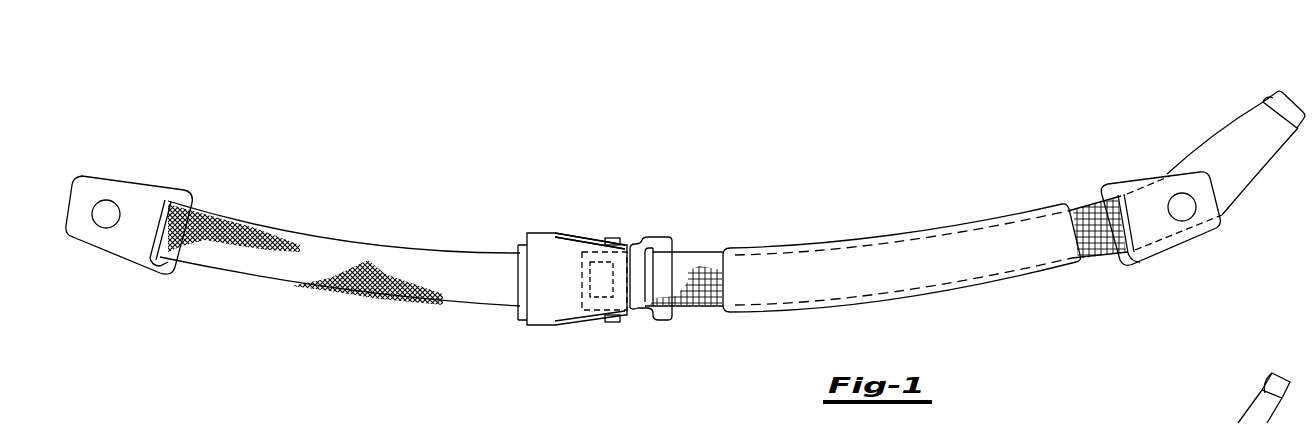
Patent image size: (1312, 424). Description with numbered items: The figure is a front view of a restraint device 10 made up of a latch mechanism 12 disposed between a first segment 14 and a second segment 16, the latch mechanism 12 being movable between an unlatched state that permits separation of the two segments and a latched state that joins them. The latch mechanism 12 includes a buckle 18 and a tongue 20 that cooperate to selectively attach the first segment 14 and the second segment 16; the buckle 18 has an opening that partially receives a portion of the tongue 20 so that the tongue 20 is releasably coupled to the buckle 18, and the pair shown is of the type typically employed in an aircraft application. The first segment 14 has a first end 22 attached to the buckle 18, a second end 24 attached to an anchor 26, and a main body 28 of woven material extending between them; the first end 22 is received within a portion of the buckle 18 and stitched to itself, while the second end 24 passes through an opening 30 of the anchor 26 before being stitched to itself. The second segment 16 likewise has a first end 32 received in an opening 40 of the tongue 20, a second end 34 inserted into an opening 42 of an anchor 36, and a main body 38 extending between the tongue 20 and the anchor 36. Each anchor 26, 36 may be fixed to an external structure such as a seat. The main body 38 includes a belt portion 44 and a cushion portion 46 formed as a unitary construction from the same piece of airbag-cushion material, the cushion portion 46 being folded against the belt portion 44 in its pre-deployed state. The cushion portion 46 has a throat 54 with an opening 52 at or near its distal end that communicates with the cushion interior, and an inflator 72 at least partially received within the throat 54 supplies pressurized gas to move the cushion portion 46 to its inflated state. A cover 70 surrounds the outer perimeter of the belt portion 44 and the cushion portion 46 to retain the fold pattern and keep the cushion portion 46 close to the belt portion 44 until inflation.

The restraint device 10 is at (244, 125).
The latch mechanism 12 is at (587, 332).
The first segment 14 is at (366, 233).
The second segment 16 is at (997, 203).
The buckle 18 is at (555, 235).
The tongue 20 is at (665, 322).
The first end 22 is at (541, 254).
The second end 24 is at (166, 200).
The anchor 26 is at (130, 192).
The main body 28 is at (295, 268).
The opening 30 is at (150, 258).
The first end 32 is at (637, 254).
The second end 34 is at (1121, 196).
The anchor 36 is at (1165, 185).
The main body 38 is at (705, 302).
The opening 40 is at (655, 322).
The opening 42 is at (1138, 268).
The belt portion 44 is at (705, 256).
The cushion portion 46 is at (882, 258).
The opening 52 is at (1266, 100).
The throat 54 is at (1255, 177).
The cover 70 is at (820, 245).
The inflator 72 is at (1288, 90).